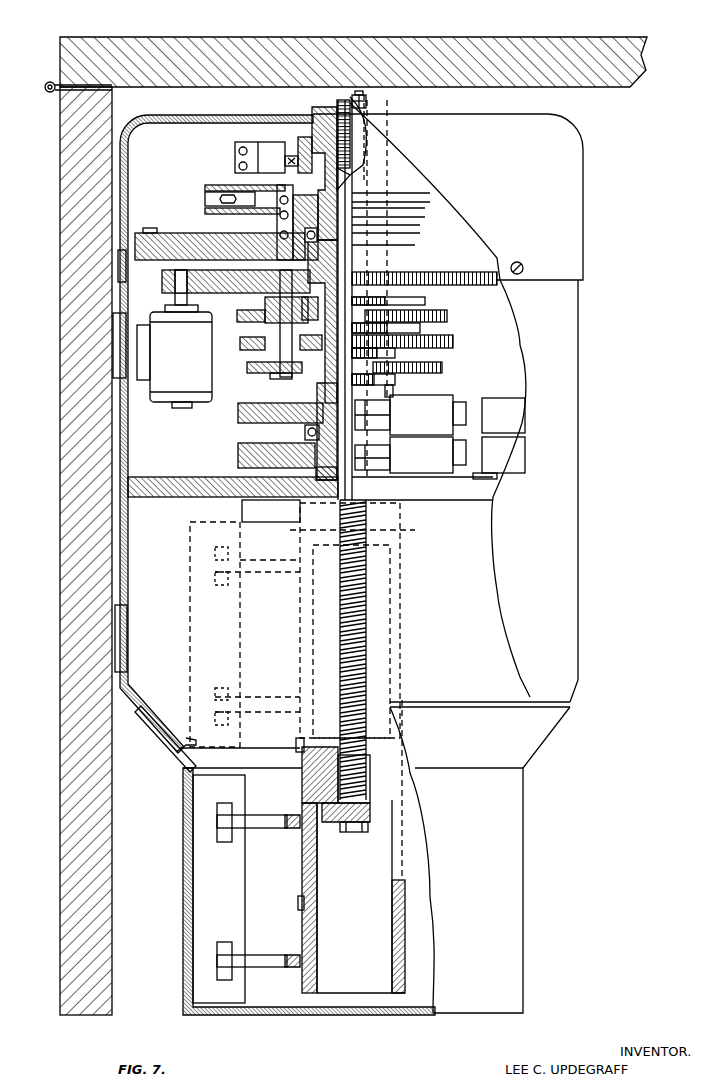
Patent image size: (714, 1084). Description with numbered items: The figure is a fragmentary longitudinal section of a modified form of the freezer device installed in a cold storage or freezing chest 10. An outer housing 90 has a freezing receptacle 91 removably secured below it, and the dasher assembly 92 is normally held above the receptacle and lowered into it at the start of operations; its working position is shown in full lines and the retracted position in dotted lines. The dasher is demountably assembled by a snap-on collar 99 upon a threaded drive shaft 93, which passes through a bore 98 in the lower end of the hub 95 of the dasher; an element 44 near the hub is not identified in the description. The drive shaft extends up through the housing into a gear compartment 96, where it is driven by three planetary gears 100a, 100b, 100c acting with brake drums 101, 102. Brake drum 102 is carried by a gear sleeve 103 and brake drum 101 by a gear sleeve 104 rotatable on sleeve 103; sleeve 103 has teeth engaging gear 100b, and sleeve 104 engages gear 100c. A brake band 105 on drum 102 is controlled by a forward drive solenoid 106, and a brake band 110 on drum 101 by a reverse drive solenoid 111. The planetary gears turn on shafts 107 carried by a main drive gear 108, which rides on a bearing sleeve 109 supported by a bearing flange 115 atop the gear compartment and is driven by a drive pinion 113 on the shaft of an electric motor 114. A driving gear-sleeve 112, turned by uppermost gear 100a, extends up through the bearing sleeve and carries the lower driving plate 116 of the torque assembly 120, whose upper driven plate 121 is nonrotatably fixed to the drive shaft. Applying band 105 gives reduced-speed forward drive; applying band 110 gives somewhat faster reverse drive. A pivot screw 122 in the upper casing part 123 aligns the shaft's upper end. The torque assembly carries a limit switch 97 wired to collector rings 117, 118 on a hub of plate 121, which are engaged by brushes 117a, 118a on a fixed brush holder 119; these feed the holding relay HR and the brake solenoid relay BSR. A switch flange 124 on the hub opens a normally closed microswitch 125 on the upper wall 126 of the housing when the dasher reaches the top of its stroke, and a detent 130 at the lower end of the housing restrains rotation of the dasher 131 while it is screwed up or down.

The cold storage or freezing chest 10 is at (75, 325).
The outer housing 90 is at (578, 385).
The freezing receptacle 91 is at (518, 868).
The dasher assembly 92 is at (305, 884).
The threaded drive shaft 93 is at (348, 193).
The nut 44 is at (335, 793).
The hub 95 is at (305, 902).
The gear compartment 96 is at (140, 425).
The limit switch 97 is at (283, 198).
The bore 98 is at (322, 920).
The snap-on collar 99 is at (334, 822).
The planetary gear 100a is at (447, 316).
The planetary gear 100b is at (453, 342).
The planetary gear 100c is at (442, 368).
The brake drum 101 is at (262, 425).
The brake drum 102 is at (246, 463).
The gear sleeve 103 is at (330, 395).
The gear sleeve 104 is at (385, 393).
The brake band 105 is at (240, 452).
The forward drive solenoid 106 is at (440, 460).
The shafts 107 is at (288, 352).
The main drive gear 108 is at (490, 292).
The bearing sleeve 109 is at (310, 263).
The brake band 110 is at (240, 412).
The reverse drive solenoid 111 is at (440, 421).
The driving gear-sleeve 112 is at (327, 250).
The drive pinion 113 is at (170, 280).
The electric motor 114 is at (200, 358).
The bearing flange 115 is at (185, 232).
The lower driving plate 116 is at (205, 211).
The collector ring 117 is at (360, 148).
The brush 117a is at (300, 160).
The collector ring 118 is at (372, 163).
The brush 118a is at (290, 160).
The fixed brush holder 119 is at (235, 156).
The torque assembly 120 is at (200, 196).
The upper driven plate 121 is at (207, 185).
The pivot screw 122 is at (366, 100).
The upper casing part 123 is at (578, 175).
The switch flange 124 is at (302, 770).
The microswitch 125 is at (283, 520).
The upper wall 126 is at (176, 487).
The detent 130 is at (183, 740).
The dasher 131 is at (240, 872).
The brake solenoid relay BSR is at (517, 422).
The holding relay HR is at (500, 458).